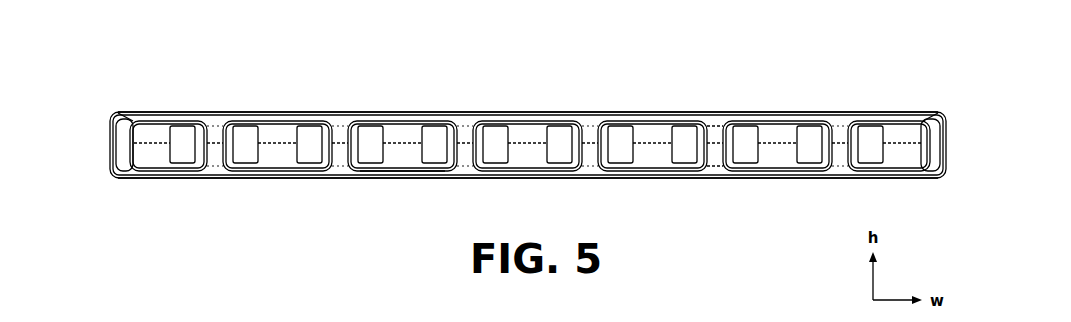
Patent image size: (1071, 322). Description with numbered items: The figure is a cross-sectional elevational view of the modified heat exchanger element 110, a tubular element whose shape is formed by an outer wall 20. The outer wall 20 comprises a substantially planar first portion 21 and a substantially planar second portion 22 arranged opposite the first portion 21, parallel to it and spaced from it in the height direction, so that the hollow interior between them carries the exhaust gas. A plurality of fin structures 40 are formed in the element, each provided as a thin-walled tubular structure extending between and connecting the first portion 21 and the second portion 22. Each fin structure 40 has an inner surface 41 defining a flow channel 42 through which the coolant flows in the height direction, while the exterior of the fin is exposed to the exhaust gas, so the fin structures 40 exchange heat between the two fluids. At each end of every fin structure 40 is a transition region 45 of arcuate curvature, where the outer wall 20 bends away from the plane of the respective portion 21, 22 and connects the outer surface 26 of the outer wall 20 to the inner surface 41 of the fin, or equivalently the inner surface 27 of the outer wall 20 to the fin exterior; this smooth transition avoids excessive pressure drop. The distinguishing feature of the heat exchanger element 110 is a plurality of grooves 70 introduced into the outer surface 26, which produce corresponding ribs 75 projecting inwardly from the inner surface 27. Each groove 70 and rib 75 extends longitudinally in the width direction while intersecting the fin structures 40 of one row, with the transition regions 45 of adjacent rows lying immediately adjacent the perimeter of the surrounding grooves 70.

The heat exchanger element 110 is at (172, 54).
The outer wall 20 is at (120, 107).
The first portion 21 is at (540, 112).
The second portion 22 is at (540, 178).
The outer surface 26 is at (688, 114).
The inner surface 27 is at (407, 170).
The fin structure 40 is at (742, 149).
The inner surface 41 is at (720, 125).
The flow channel 42 is at (777, 146).
The transition region 45 is at (712, 125).
The groove 70 is at (400, 112).
The rib 75 is at (372, 163).